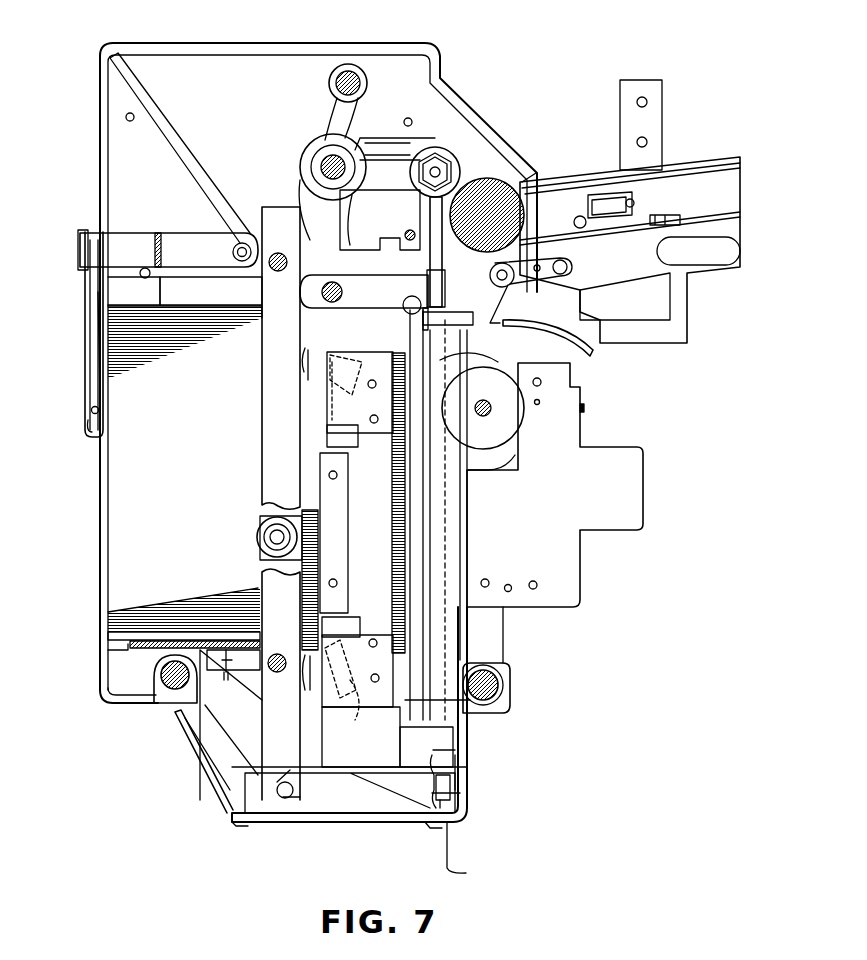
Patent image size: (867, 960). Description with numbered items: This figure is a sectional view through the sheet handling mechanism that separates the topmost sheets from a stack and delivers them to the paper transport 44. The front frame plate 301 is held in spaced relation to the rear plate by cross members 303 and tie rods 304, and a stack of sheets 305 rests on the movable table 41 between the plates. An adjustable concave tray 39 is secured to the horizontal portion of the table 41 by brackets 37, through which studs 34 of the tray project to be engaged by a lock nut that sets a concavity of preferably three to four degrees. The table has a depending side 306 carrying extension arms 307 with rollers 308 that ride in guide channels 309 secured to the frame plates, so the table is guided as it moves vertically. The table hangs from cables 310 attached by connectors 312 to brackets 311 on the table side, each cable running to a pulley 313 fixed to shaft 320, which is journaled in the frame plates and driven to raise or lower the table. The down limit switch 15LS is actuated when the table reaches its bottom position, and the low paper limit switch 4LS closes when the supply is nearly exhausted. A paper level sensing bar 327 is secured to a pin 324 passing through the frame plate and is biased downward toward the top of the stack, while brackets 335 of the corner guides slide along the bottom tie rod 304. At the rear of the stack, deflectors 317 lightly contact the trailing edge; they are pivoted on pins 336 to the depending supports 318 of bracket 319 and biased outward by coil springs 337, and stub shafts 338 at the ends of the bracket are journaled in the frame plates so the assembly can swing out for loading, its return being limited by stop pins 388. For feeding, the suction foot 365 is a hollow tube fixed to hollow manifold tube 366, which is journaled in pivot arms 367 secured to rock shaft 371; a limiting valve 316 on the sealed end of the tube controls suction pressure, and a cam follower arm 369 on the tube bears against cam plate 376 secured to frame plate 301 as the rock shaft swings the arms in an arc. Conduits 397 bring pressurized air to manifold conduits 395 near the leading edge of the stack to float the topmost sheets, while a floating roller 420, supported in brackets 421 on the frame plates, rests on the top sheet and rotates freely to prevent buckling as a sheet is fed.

The front frame plate 301 is at (280, 44).
The cross members 303 is at (585, 446).
The tie rods 304 is at (328, 83).
The stack of sheets 305 is at (106, 634).
The depending side 306 is at (222, 770).
The extension arms 307 is at (262, 576).
The rollers 308 is at (257, 537).
The guide channels 309 is at (262, 484).
The cables 310 is at (447, 528).
The brackets 311 is at (462, 760).
The connectors 312 is at (460, 790).
The pulley 313 is at (480, 470).
The limiting valve 316 is at (438, 165).
The deflectors 317 is at (88, 305).
The depending supports 318 is at (84, 424).
The bracket 319 is at (135, 236).
The shaft 320 is at (492, 412).
The pin 324 is at (352, 308).
The paper level sensing bar 327 is at (160, 293).
The brackets 335 is at (492, 712).
The pins 336 is at (99, 411).
The coil spring 337 is at (101, 396).
The stub shafts 338 is at (242, 243).
The suction foot 365 is at (470, 262).
The hollow manifold tube 366 is at (455, 160).
The pivot arms 367 is at (368, 140).
The cam follower arm 369 is at (440, 218).
The rock shaft 371 is at (320, 165).
The cam plate 376 is at (372, 140).
The stop pins 388 is at (163, 286).
The manifold conduits 395 is at (452, 366).
The conduits 397 is at (594, 356).
The floating roller 420 is at (380, 300).
The brackets 421 is at (362, 236).
The low paper limit switch 4LS is at (336, 352).
The down limit switch 15LS is at (378, 692).
The studs 34 is at (232, 680).
The brackets 37 is at (212, 672).
The adjustable concave tray 39 is at (112, 650).
The movable table 41 is at (142, 648).
The paper transport 44 is at (603, 150).